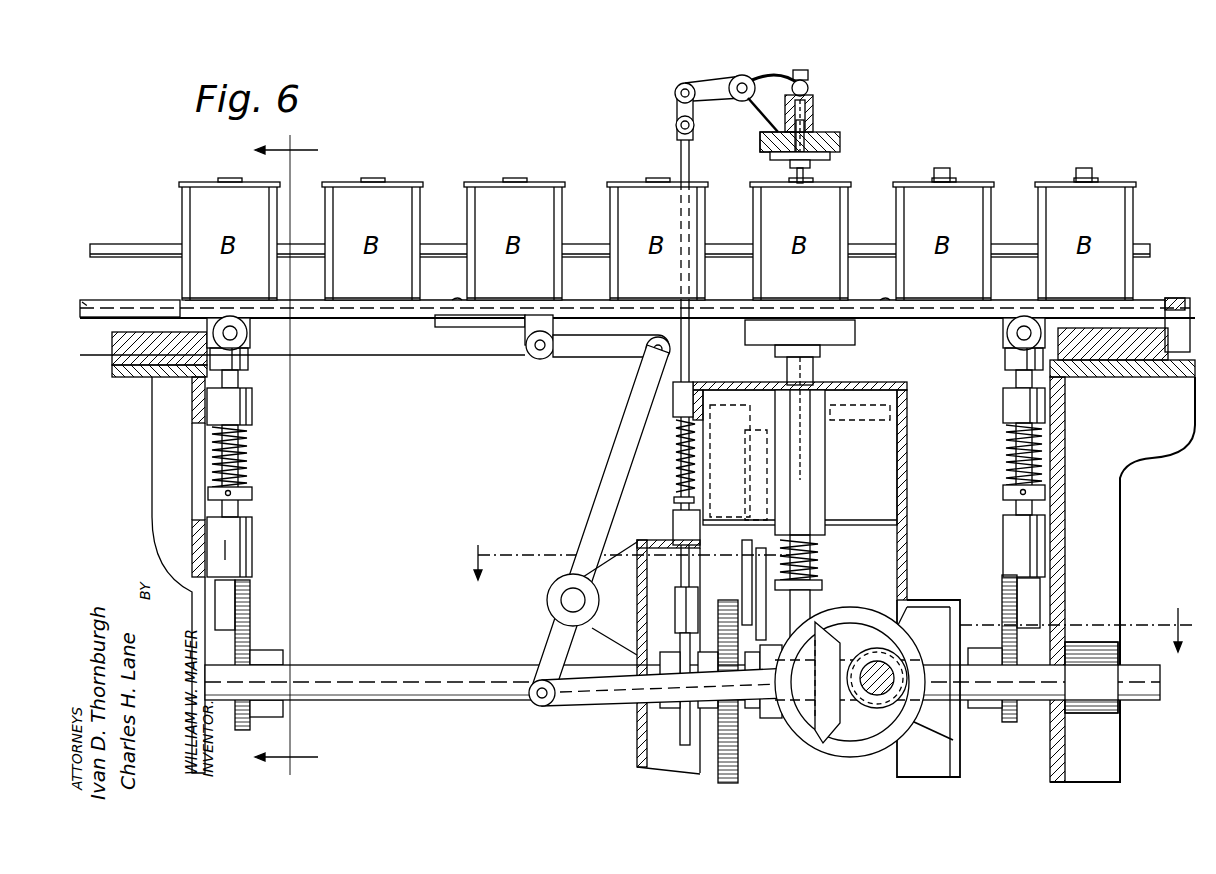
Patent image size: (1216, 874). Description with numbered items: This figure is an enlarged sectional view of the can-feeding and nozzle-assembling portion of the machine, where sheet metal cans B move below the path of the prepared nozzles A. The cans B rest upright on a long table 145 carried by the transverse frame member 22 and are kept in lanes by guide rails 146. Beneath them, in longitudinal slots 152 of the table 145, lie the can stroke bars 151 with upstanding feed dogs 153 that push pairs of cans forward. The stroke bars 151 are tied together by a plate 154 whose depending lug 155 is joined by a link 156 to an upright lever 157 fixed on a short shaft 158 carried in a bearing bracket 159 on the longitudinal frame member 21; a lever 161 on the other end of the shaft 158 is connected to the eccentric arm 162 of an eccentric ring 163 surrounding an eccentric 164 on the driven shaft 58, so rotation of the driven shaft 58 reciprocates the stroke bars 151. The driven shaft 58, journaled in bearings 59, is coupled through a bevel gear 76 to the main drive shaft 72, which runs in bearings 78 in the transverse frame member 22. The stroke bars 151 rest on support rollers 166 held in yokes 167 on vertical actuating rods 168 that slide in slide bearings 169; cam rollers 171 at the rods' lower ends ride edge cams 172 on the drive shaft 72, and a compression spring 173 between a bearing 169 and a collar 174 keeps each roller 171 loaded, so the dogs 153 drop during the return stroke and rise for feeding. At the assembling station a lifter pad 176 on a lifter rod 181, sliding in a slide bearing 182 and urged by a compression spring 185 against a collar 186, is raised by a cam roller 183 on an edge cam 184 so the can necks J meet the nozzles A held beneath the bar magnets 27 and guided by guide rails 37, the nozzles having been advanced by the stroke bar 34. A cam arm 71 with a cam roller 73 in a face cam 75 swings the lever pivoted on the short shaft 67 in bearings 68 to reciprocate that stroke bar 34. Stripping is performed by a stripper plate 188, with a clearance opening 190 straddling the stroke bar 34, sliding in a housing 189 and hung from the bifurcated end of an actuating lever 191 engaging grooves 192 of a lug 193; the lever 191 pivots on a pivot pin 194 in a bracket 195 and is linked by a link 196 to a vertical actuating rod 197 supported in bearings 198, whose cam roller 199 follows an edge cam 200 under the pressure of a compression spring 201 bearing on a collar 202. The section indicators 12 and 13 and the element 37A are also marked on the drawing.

The guide rails 146 is at (580, 243).
The table 145 is at (150, 300).
The longitudinal slots 152 is at (100, 300).
The can stroke bars 151 is at (330, 318).
The feed dogs 153 is at (456, 300).
The cans B is at (657, 239).
The necks J is at (222, 182).
The nozzles A is at (945, 168).
The transverse frame member 22 is at (152, 430).
The support rollers 166 is at (238, 334).
The yokes 167 is at (240, 362).
The actuating rods 168 is at (222, 380).
The slide bearings 169 is at (238, 410).
The compression spring 173 is at (247, 455).
The collar 174 is at (252, 493).
The cam rollers 171 is at (245, 600).
The edge cams 172 is at (248, 645).
The main drive shaft 72 is at (380, 665).
The bearings 78 is at (1088, 708).
The plate 154 is at (488, 327).
The depending lug 155 is at (535, 335).
The link 156 is at (606, 357).
The lifter pad 176 is at (838, 333).
The lifter rod 181 is at (813, 370).
The longitudinal frame member 21 is at (907, 455).
The short shaft 67 is at (907, 395).
The bearings 68 is at (799, 462).
The slide bearing 182 is at (812, 480).
The compression spring 185 is at (818, 540).
The collar 186 is at (822, 582).
The cam roller 183 is at (810, 603).
The actuating rod 197 is at (681, 160).
The bearings 198 is at (673, 400).
The compression spring 201 is at (676, 455).
The collar 202 is at (674, 500).
The bearings 59 is at (938, 708).
The section line 13 is at (830, 583).
The cam roller 199 is at (678, 610).
The edge cam 200 is at (682, 732).
The cam arm 71 is at (747, 568).
The cam roller 73 is at (766, 638).
The face cam 75 is at (738, 760).
The edge cam 184 is at (775, 718).
The upright lever 157 is at (600, 470).
The lever 161 is at (545, 634).
The bearing bracket 159 is at (615, 560).
The short shaft 158 is at (572, 600).
The eccentric arm 162 is at (590, 707).
The eccentric 164 is at (873, 735).
The bevel gear 76 is at (865, 700).
The driven shaft 58 is at (885, 665).
The eccentric ring 163 is at (828, 745).
The section line 12 is at (299, 455).
The link 196 is at (677, 110).
The pivot pin 194 is at (742, 75).
The actuating lever 191 is at (770, 76).
The bracket 195 is at (762, 118).
The lug 193 is at (802, 70).
The grooves 192 is at (810, 84).
The stripper plate 188 is at (813, 100).
The clearance opening 190 is at (812, 118).
The stroke bar 34 is at (805, 126).
The bar magnets 27 is at (840, 140).
The housing 189 is at (762, 138).
The guide rails 37 is at (830, 156).
The plate 37A is at (797, 168).